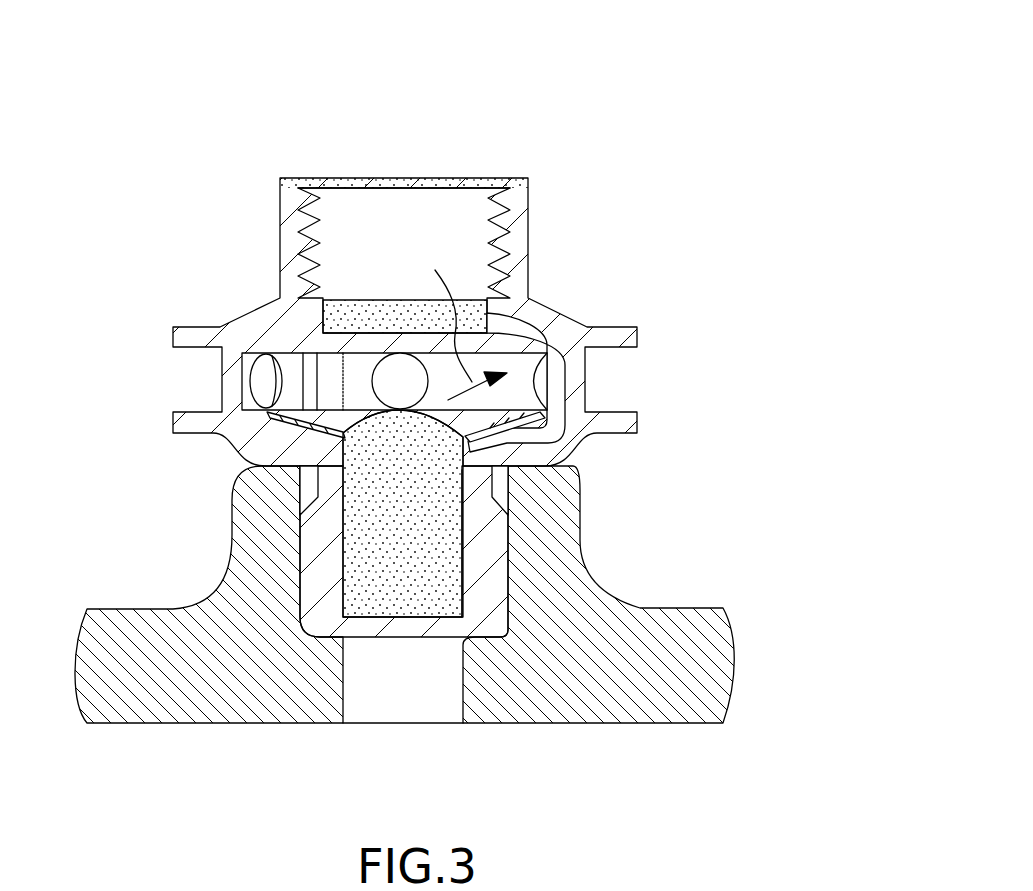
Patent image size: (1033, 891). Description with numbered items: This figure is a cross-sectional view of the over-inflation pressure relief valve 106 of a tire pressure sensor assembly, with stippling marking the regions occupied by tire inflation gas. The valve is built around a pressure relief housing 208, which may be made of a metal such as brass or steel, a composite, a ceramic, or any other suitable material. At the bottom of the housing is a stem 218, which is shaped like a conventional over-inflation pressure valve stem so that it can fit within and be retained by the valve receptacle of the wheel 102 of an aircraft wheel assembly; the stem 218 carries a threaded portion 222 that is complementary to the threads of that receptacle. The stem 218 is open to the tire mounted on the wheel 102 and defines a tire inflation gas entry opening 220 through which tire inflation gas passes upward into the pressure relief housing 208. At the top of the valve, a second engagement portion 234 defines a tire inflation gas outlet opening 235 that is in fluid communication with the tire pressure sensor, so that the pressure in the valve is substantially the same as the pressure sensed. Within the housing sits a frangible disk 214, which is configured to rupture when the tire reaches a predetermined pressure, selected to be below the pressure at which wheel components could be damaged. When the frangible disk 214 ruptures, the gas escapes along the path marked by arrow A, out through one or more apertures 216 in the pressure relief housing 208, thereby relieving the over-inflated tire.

The wheel 102 is at (720, 660).
The over-inflation pressure relief valve 106 is at (443, 404).
The pressure relief housing 208 is at (401, 291).
The frangible disk 214 is at (492, 410).
The apertures 216 is at (545, 358).
The stem 218 is at (487, 600).
The tire inflation gas entry opening 220 is at (400, 607).
The threaded portion 222 is at (325, 543).
The second engagement portion 234 is at (511, 215).
The tire inflation gas outlet opening 235 is at (402, 188).